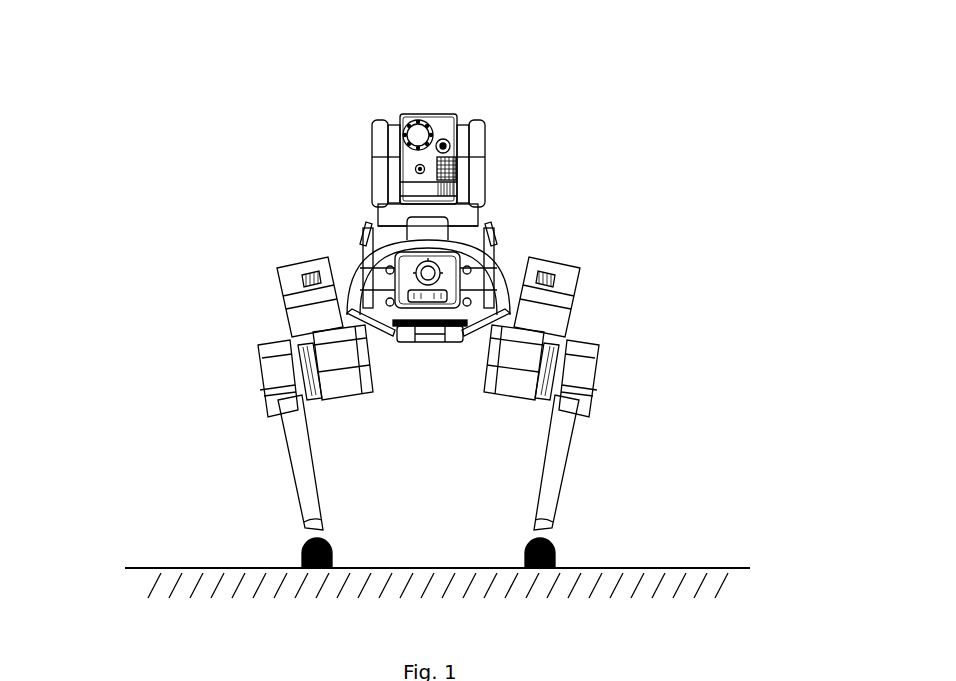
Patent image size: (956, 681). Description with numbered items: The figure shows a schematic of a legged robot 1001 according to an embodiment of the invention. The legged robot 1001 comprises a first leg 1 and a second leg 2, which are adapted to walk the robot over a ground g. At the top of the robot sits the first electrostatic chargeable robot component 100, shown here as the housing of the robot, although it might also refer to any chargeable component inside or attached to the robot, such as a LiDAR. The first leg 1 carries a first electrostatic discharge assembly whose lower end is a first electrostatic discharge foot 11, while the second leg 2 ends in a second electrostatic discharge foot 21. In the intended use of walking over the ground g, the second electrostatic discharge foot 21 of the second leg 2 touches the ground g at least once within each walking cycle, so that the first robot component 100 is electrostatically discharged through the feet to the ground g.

The legged robot 1001 is at (645, 120).
The first electrostatic chargeable robot component 100 is at (365, 165).
The first leg 1 is at (568, 457).
The second leg 2 is at (283, 440).
The first electrostatic discharge foot 11 is at (558, 545).
The second electrostatic discharge foot 21 is at (298, 548).
The ground g is at (723, 563).